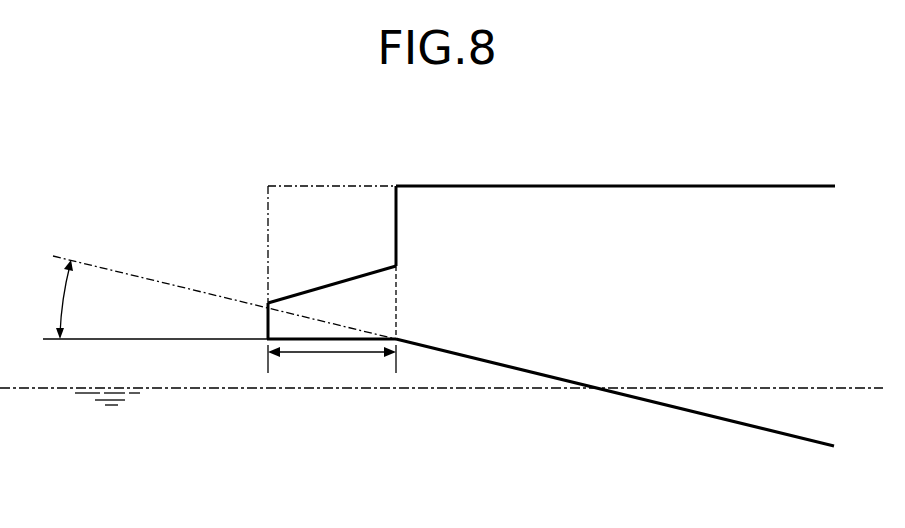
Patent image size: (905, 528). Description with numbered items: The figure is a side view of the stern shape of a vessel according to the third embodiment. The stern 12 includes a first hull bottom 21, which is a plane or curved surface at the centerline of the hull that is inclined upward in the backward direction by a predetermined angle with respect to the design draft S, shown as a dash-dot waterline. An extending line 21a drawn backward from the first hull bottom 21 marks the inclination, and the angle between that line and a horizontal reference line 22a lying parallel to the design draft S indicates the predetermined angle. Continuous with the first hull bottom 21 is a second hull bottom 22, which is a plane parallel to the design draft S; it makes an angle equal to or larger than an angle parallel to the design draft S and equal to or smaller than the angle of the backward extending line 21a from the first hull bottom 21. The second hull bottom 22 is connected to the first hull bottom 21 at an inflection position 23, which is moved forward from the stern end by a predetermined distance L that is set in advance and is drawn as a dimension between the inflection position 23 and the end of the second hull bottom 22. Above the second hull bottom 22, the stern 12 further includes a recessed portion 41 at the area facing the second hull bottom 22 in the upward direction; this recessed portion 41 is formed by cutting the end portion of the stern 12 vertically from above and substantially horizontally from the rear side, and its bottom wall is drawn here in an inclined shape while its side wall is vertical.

The stern 12 is at (544, 263).
The recessed portion 41 is at (345, 277).
The second hull bottom 22 is at (300, 341).
The bottom plate extension line 22a is at (127, 338).
The first hull bottom 21 is at (548, 378).
The extension of inclined line 21a is at (114, 271).
The inflection position 23 is at (398, 342).
The predetermined distance L is at (332, 364).
The design draft S is at (60, 387).